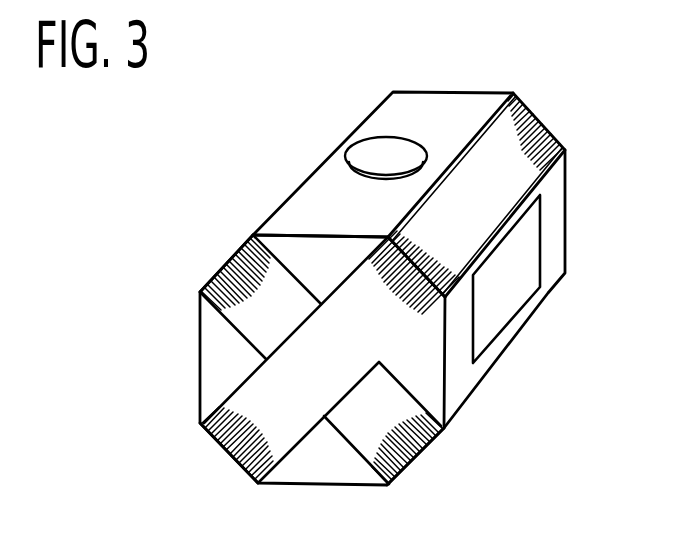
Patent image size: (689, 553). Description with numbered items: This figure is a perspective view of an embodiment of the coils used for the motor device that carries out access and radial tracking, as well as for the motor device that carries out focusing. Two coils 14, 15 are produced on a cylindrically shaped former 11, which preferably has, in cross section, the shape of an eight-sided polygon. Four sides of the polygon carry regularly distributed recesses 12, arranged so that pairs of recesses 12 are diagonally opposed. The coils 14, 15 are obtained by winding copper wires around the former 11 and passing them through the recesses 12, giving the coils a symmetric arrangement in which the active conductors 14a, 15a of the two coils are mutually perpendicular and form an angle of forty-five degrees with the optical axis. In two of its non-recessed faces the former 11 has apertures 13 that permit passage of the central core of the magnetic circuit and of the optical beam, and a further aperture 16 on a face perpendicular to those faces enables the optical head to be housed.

The former 11 is at (460, 98).
The recesses 12 is at (252, 236).
The apertures 13 is at (500, 318).
The coil 14 is at (543, 127).
The active conductors 14a is at (232, 444).
The coil 15 is at (226, 266).
The active conductors 15a is at (413, 452).
The aperture 16 is at (372, 151).